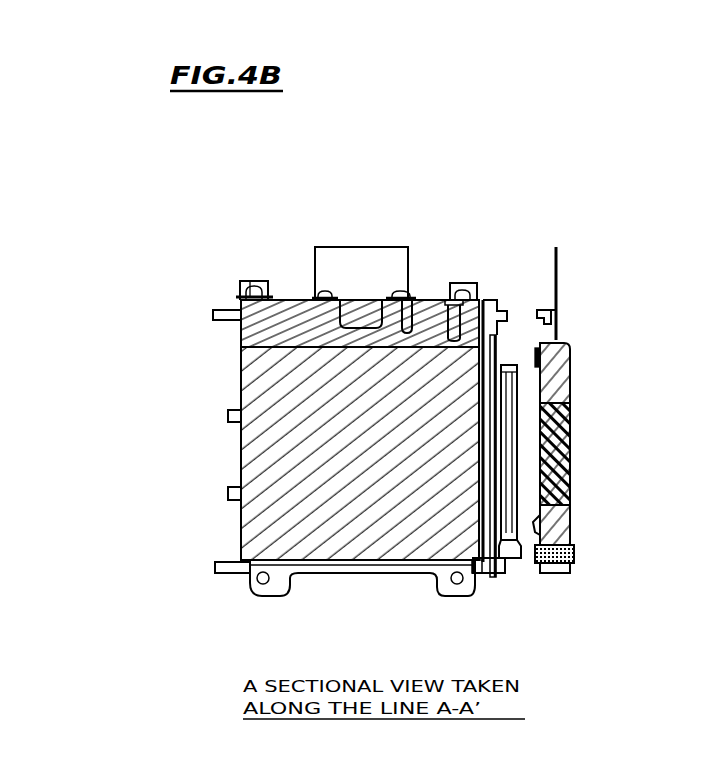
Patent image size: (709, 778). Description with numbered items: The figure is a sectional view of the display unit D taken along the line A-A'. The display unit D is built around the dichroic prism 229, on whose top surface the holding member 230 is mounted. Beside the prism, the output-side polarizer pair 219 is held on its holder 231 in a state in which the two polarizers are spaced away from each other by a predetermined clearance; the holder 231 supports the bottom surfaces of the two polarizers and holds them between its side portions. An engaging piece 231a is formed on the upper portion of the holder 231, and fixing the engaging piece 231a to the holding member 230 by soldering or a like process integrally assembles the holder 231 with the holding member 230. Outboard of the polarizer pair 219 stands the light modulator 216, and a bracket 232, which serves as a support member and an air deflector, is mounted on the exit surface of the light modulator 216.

The display unit D is at (378, 243).
The light modulator 216 is at (570, 384).
The output-side polarizer pair 219 is at (571, 452).
The dichroic prism 229 is at (241, 388).
The holding member 230 is at (298, 300).
The holder 231 is at (514, 552).
The engaging piece 231a is at (490, 307).
The bracket 232 is at (557, 330).